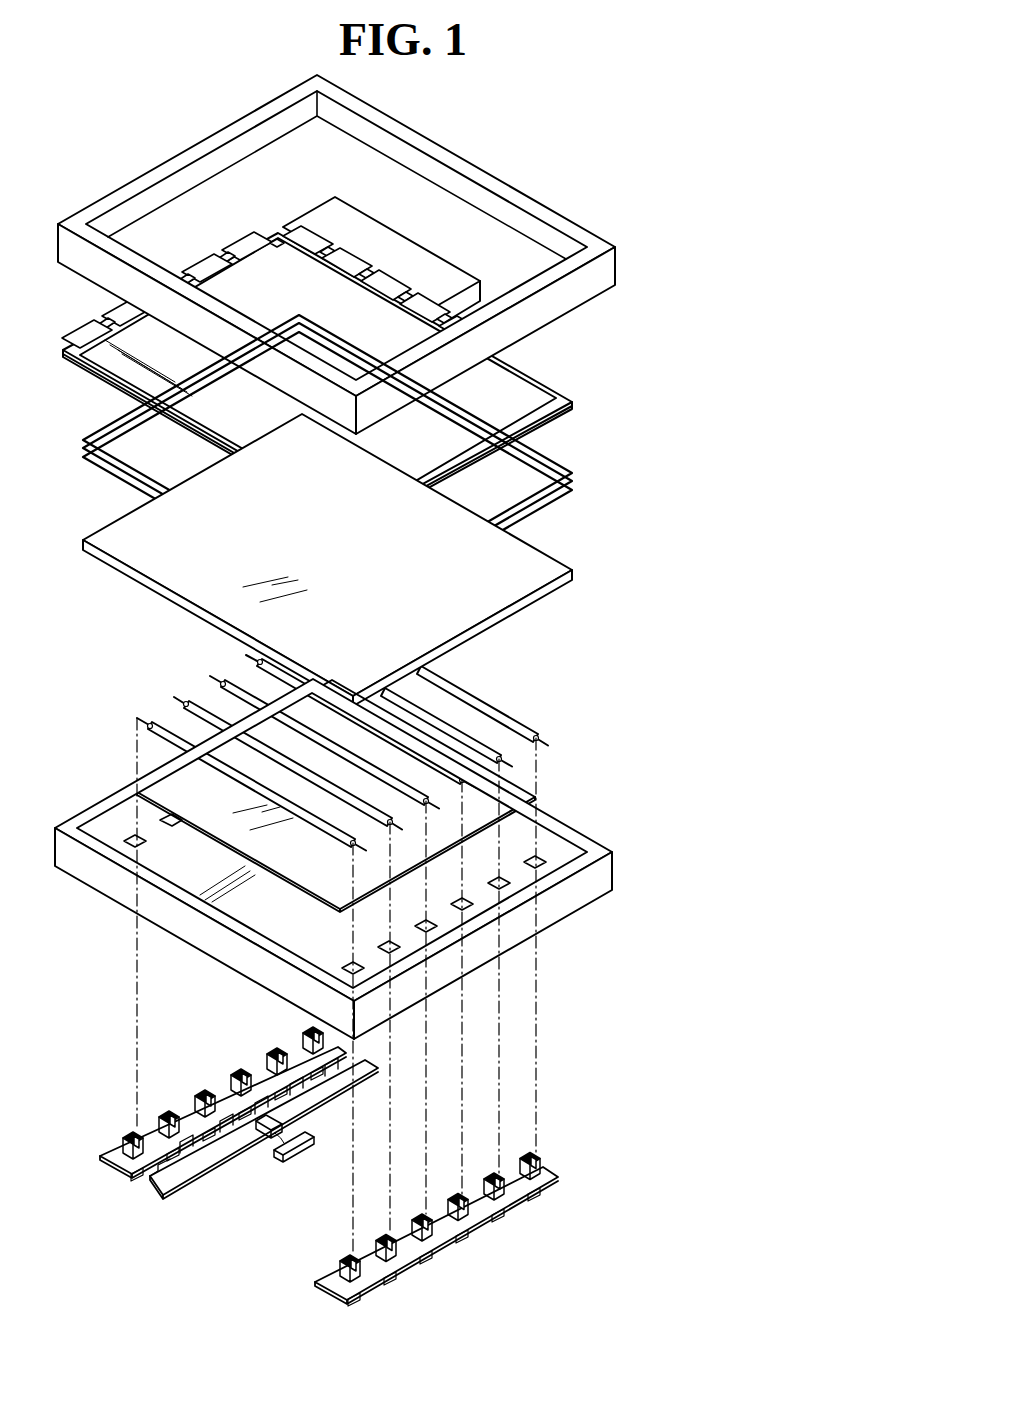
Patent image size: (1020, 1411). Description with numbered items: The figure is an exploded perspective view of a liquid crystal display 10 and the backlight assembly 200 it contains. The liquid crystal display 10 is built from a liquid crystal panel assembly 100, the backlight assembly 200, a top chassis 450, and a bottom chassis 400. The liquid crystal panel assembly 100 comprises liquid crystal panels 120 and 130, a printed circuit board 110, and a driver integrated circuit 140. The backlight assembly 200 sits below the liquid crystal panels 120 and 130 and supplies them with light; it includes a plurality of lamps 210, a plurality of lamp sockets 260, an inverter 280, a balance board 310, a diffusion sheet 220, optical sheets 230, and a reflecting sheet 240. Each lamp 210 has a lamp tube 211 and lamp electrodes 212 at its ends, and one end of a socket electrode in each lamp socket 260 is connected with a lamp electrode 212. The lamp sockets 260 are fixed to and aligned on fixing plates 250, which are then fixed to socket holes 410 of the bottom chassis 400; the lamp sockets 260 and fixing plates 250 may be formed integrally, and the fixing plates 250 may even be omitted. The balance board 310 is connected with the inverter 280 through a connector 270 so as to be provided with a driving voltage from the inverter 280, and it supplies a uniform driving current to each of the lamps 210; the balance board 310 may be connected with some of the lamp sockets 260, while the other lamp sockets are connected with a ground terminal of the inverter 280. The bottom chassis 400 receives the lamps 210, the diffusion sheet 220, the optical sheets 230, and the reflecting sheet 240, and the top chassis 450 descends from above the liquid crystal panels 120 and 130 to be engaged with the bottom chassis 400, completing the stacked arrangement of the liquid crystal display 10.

The liquid crystal display 10 is at (575, 175).
The top chassis 450 is at (603, 273).
The liquid crystal panel assembly 100 is at (385, 362).
The printed circuit board 110 is at (537, 347).
The driver integrated circuit 140 is at (542, 373).
The liquid crystal panel 120 is at (575, 392).
The liquid crystal panel 130 is at (580, 400).
The backlight assembly 200 is at (418, 613).
The optical sheets 230 is at (577, 472).
The diffusion sheet 220 is at (547, 563).
The lamp 210 is at (399, 753).
The lamp tube 211 is at (517, 718).
The lamp electrode 212 is at (547, 740).
The reflecting sheet 240 is at (512, 795).
The bottom chassis 400 is at (363, 859).
The socket hole 410 is at (547, 862).
The fixing plate 250 is at (112, 1160).
The lamp socket 260 is at (121, 1140).
The connector 270 is at (295, 1126).
The inverter 280 is at (273, 1155).
The balance board 310 is at (160, 1192).